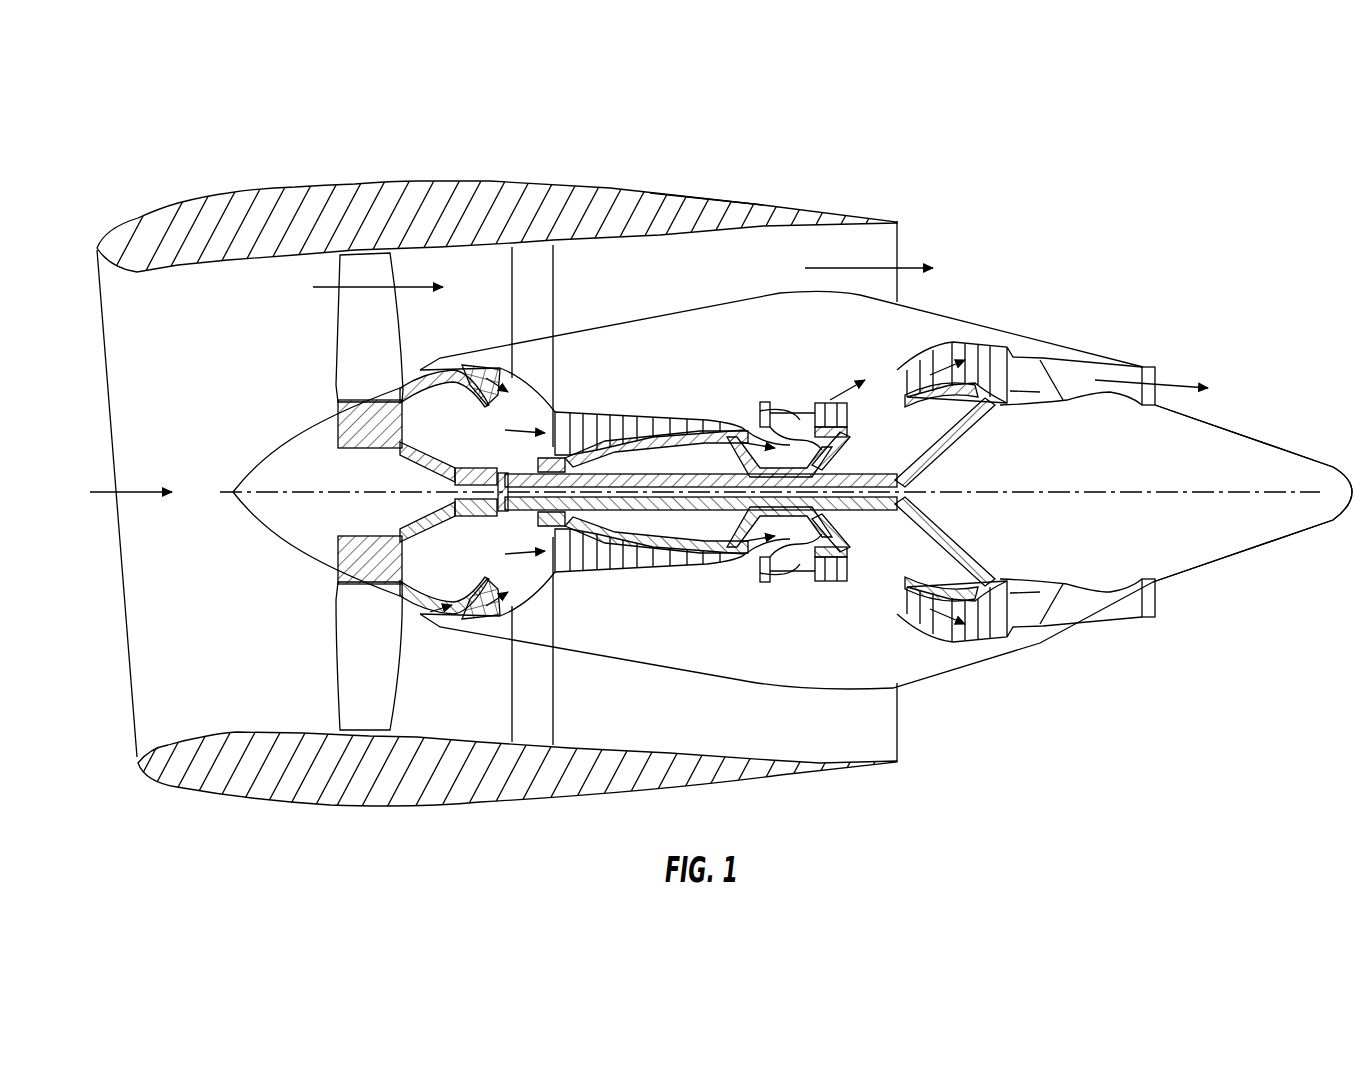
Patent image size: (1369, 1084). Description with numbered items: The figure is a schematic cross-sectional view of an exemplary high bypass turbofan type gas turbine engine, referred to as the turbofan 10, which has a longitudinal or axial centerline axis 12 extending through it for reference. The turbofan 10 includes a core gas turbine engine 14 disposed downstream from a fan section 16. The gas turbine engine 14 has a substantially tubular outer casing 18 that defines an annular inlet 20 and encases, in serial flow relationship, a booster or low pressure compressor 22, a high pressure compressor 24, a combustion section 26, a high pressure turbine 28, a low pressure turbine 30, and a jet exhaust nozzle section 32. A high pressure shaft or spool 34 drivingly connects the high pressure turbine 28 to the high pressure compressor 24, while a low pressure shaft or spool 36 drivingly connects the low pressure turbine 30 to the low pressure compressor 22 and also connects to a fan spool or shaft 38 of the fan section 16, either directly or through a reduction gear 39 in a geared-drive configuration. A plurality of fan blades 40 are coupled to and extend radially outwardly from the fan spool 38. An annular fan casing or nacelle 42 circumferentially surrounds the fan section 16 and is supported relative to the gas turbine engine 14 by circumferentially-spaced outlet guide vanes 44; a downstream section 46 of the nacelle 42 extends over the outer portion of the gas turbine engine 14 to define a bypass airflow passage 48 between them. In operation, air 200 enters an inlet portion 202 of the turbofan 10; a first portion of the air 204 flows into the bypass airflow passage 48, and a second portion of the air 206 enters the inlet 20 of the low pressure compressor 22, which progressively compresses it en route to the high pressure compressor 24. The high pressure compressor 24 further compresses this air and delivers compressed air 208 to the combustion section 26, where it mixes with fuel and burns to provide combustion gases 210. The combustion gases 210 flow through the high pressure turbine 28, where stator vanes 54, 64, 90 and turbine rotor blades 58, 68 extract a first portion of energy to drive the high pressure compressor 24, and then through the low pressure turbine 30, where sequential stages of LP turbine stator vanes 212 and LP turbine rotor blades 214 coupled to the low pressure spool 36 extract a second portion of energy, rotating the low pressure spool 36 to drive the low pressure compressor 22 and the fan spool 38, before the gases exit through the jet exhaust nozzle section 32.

The turbofan 10 is at (1060, 194).
The axial centerline axis 12 is at (1085, 490).
The gas turbine engine 14 is at (745, 363).
The fan section 16 is at (395, 163).
The outer casing 18 is at (737, 682).
The annular inlet 20 is at (460, 612).
The low pressure compressor 22 is at (507, 577).
The high pressure compressor 24 is at (588, 567).
The combustion section 26 is at (783, 563).
The high pressure turbine 28 is at (848, 565).
The low pressure turbine 30 is at (990, 642).
The jet exhaust nozzle section 32 is at (1160, 376).
The high pressure spool 34 is at (820, 467).
The low pressure spool 36 is at (515, 470).
The fan spool 38 is at (400, 450).
The reduction gear 39 is at (503, 513).
The fan blades 40 is at (337, 665).
The nacelle 42 is at (394, 802).
The outlet guide vanes 44 is at (553, 275).
The downstream section 46 is at (790, 204).
The bypass airflow passage 48 is at (700, 294).
The stator vanes 54 is at (800, 558).
The turbine rotor blades 58 is at (822, 559).
The stator vanes 64 is at (830, 560).
The turbine rotor blades 68 is at (853, 560).
The stator vanes 90 is at (860, 563).
The air 200 is at (127, 490).
The inlet portion 202 is at (135, 743).
The first portion of air 204 is at (313, 287).
The second portion of air 206 is at (430, 370).
The compressed air 208 is at (758, 403).
The combustion gases 210 is at (830, 402).
The LP turbine stator vanes 212 is at (902, 366).
The LP turbine rotor blades 214 is at (917, 358).